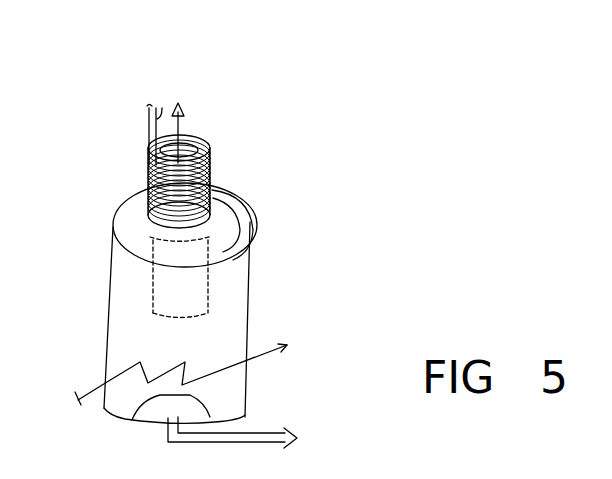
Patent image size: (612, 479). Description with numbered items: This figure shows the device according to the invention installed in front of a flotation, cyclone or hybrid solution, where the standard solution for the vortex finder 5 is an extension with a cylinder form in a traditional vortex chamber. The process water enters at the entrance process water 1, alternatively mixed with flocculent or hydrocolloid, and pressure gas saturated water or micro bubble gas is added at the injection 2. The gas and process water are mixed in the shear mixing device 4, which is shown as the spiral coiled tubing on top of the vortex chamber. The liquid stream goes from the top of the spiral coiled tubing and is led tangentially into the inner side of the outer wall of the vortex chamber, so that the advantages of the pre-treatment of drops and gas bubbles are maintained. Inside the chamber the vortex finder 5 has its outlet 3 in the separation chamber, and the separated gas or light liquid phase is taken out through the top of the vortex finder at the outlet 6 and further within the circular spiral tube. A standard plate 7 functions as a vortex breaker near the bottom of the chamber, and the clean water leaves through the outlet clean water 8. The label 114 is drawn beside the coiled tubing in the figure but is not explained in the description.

The entrance process water 1 is at (150, 104).
The injection of pressure gas saturated water/micro bubble gas 2 is at (162, 110).
The outlet of vortex finder in separation chamber 3 is at (253, 258).
The shear mixing device 4 is at (142, 128).
The vortex finder 5 is at (135, 238).
The outlet of separated gas/light liquid phase 6 is at (186, 108).
The standard plate functioning as vortex breaker 7 is at (195, 383).
The outlet clean water 8 is at (300, 438).
The coil spring 114 is at (207, 183).